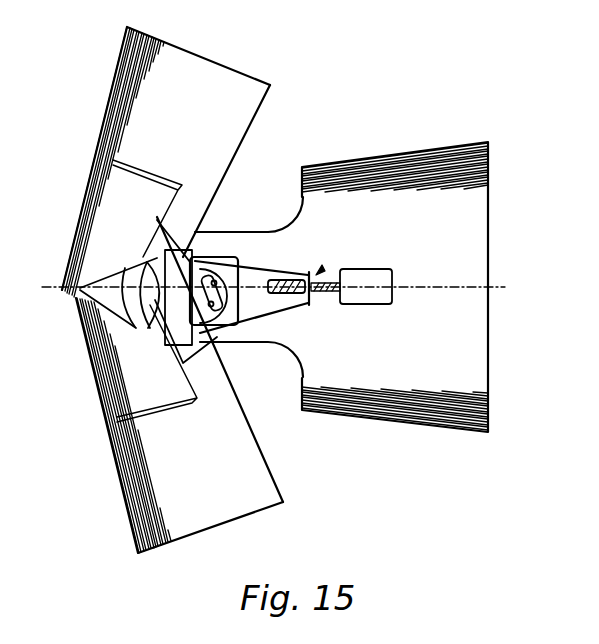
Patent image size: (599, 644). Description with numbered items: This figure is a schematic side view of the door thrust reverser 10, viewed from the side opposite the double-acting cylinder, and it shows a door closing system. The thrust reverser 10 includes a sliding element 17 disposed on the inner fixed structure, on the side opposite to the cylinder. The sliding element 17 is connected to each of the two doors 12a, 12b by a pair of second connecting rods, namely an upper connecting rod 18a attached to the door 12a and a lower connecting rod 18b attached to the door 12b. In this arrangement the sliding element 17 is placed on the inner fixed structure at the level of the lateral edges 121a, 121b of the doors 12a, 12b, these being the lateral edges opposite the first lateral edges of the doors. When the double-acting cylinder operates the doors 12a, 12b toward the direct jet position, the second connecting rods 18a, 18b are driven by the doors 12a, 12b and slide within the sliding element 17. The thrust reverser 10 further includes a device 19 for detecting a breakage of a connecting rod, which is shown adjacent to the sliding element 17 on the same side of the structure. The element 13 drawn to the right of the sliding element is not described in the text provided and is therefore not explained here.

The thrust reverser 10 is at (406, 72).
The door 12a is at (112, 90).
The door 12b is at (118, 476).
The lateral edge 121a is at (272, 100).
The lateral edge 121b is at (276, 468).
The rear plate 13 is at (450, 143).
The sliding element 17 is at (332, 266).
The upper second connecting rod 18a is at (277, 268).
The lower second connecting rod 18b is at (277, 305).
The device for detecting a breakage of a connecting rod 19 is at (390, 305).